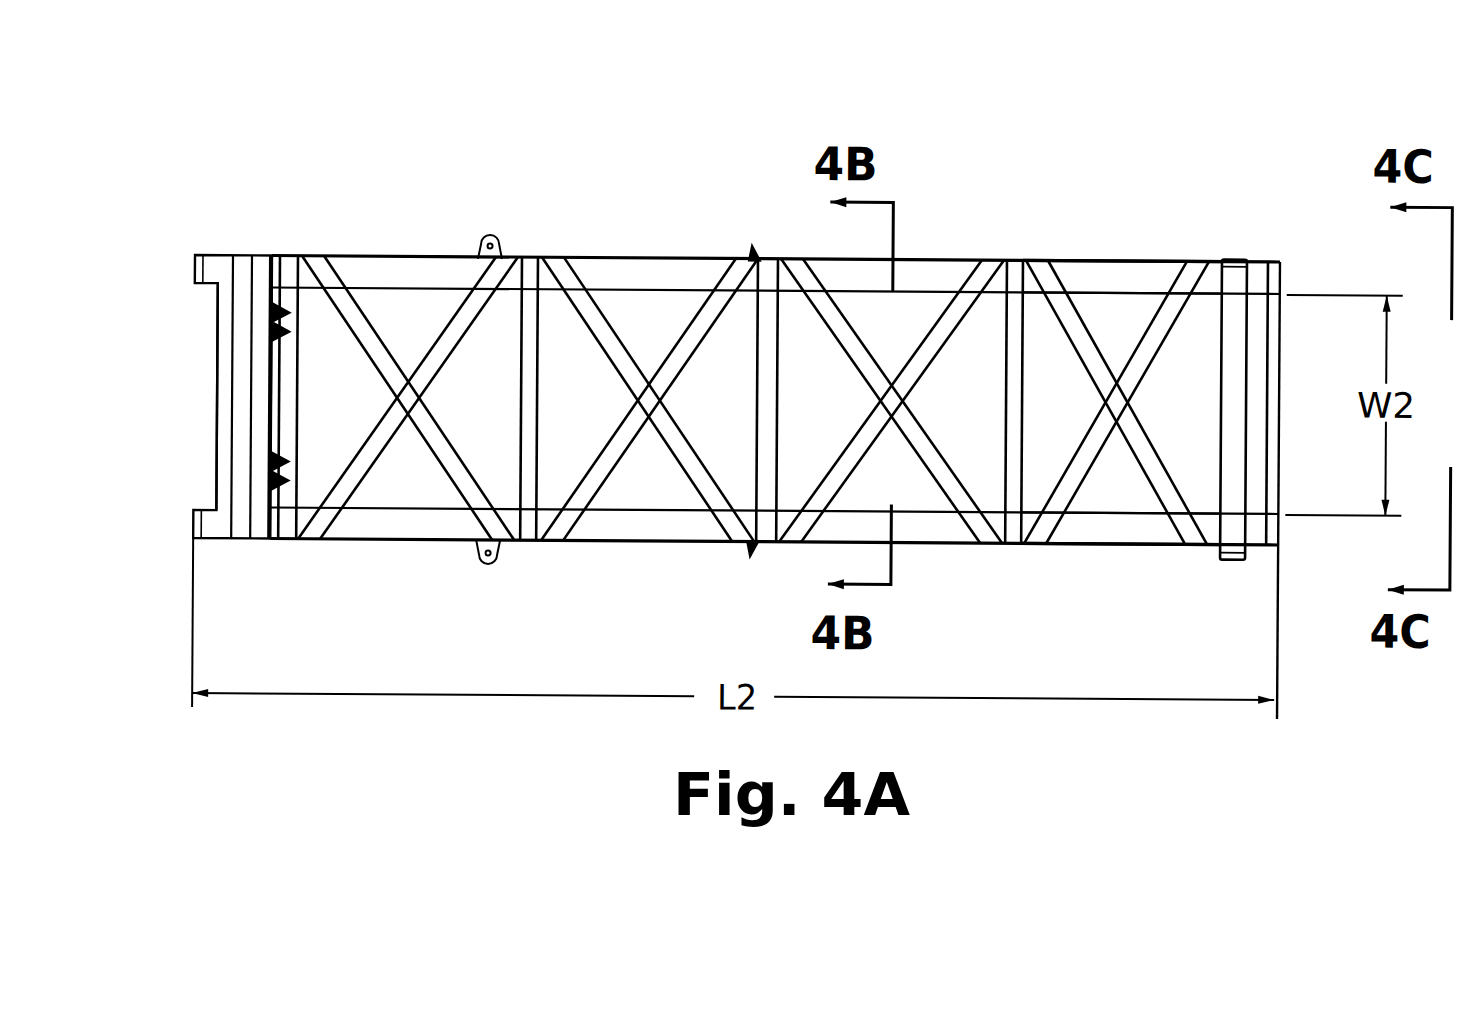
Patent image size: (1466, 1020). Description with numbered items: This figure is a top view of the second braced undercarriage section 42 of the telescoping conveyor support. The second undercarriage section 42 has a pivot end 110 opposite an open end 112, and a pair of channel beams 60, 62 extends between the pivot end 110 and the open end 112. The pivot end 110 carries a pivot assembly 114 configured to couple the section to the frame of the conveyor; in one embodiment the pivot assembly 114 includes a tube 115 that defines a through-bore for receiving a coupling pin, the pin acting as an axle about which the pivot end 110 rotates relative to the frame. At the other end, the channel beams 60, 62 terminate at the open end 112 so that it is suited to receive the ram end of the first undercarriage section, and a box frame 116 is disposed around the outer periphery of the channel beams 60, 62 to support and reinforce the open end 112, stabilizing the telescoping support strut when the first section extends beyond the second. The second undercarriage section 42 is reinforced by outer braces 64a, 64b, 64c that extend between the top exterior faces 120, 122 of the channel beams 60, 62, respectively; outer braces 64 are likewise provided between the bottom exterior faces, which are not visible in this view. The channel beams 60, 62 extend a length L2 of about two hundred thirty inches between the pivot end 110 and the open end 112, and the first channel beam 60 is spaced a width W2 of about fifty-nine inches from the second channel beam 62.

The second braced undercarriage section 42 is at (722, 104).
The channel beam 60 is at (656, 254).
The channel beam 62 is at (633, 545).
The outer braces 64 is at (686, 394).
The outer brace 64a is at (779, 398).
The outer brace 64b is at (868, 362).
The outer brace 64c is at (1012, 432).
The pivot end 110 is at (180, 262).
The open end 112 is at (1297, 250).
The pivot assembly 114 is at (238, 234).
The tube 115 is at (226, 385).
The box frame 116 is at (1282, 408).
The top exterior face 120 is at (1170, 271).
The top exterior face 122 is at (1165, 522).